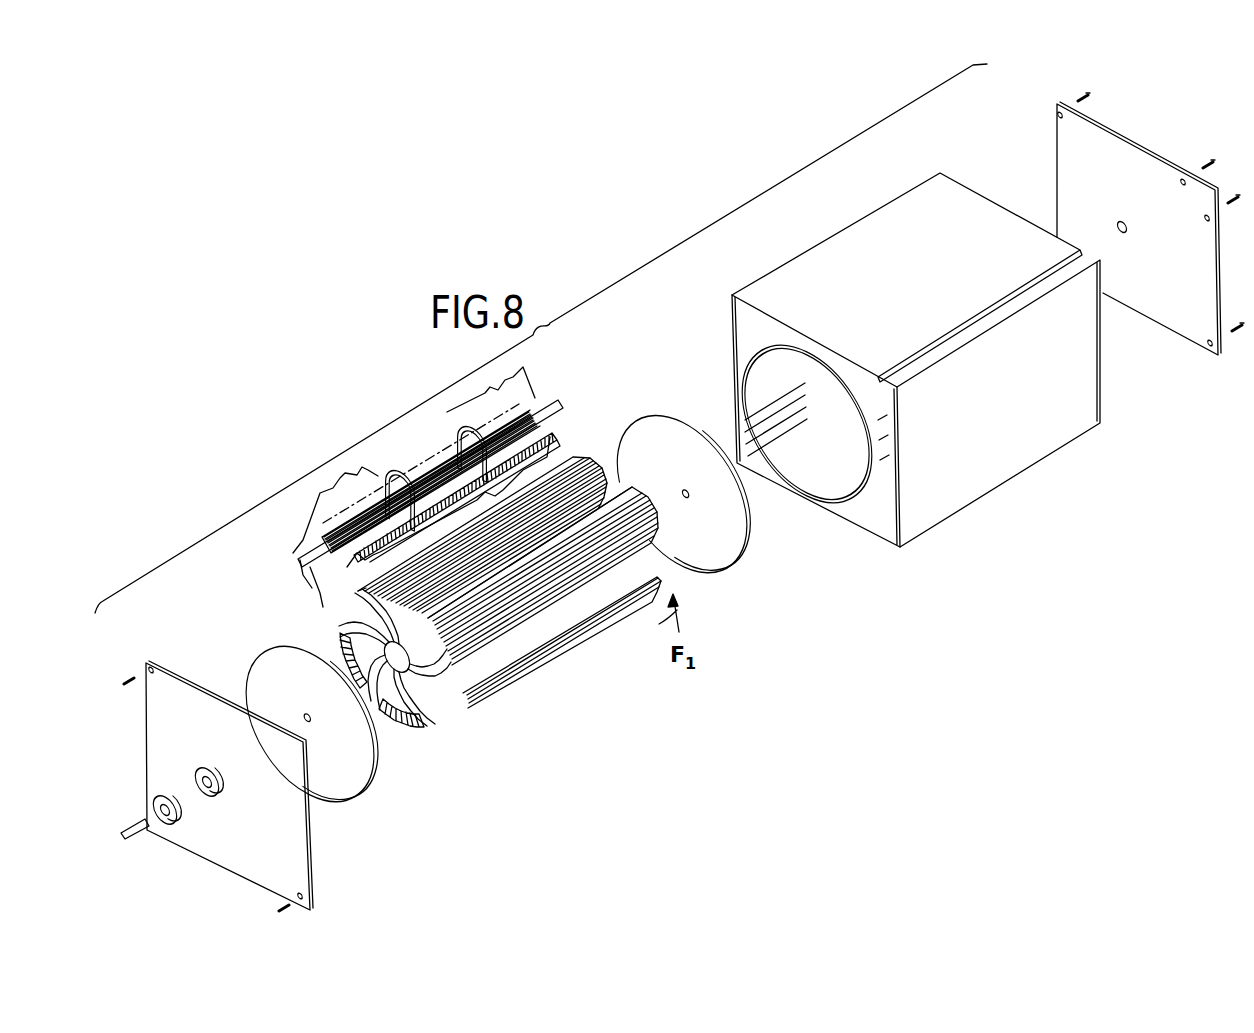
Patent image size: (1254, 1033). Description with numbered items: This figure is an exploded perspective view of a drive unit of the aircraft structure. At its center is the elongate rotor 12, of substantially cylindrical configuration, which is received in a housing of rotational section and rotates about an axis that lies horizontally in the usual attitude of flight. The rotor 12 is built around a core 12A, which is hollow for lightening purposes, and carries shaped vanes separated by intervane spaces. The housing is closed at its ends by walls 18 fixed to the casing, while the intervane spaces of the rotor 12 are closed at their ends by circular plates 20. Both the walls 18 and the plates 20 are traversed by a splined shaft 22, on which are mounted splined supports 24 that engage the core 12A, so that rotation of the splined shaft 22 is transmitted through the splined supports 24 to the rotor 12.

The rotor 12 is at (557, 662).
The core 12A is at (352, 562).
The walls 18 is at (283, 857).
The circular plates 20 is at (338, 752).
The splined shaft 22 is at (307, 560).
The splined supports 24 is at (412, 503).